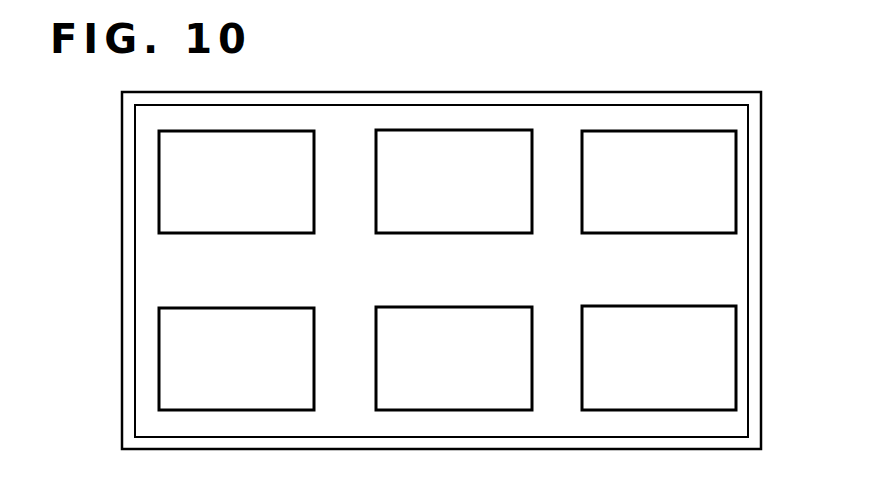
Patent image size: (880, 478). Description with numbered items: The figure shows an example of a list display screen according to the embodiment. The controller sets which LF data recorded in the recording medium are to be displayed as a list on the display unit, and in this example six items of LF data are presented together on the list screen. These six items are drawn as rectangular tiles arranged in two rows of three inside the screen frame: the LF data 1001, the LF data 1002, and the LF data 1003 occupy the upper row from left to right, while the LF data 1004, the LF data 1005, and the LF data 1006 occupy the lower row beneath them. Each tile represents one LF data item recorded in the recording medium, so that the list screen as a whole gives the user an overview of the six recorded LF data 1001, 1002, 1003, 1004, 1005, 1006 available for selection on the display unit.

The LF data 1001 is at (285, 235).
The LF data 1002 is at (507, 235).
The LF data 1003 is at (707, 235).
The LF data 1004 is at (179, 306).
The LF data 1005 is at (401, 306).
The LF data 1006 is at (601, 306).